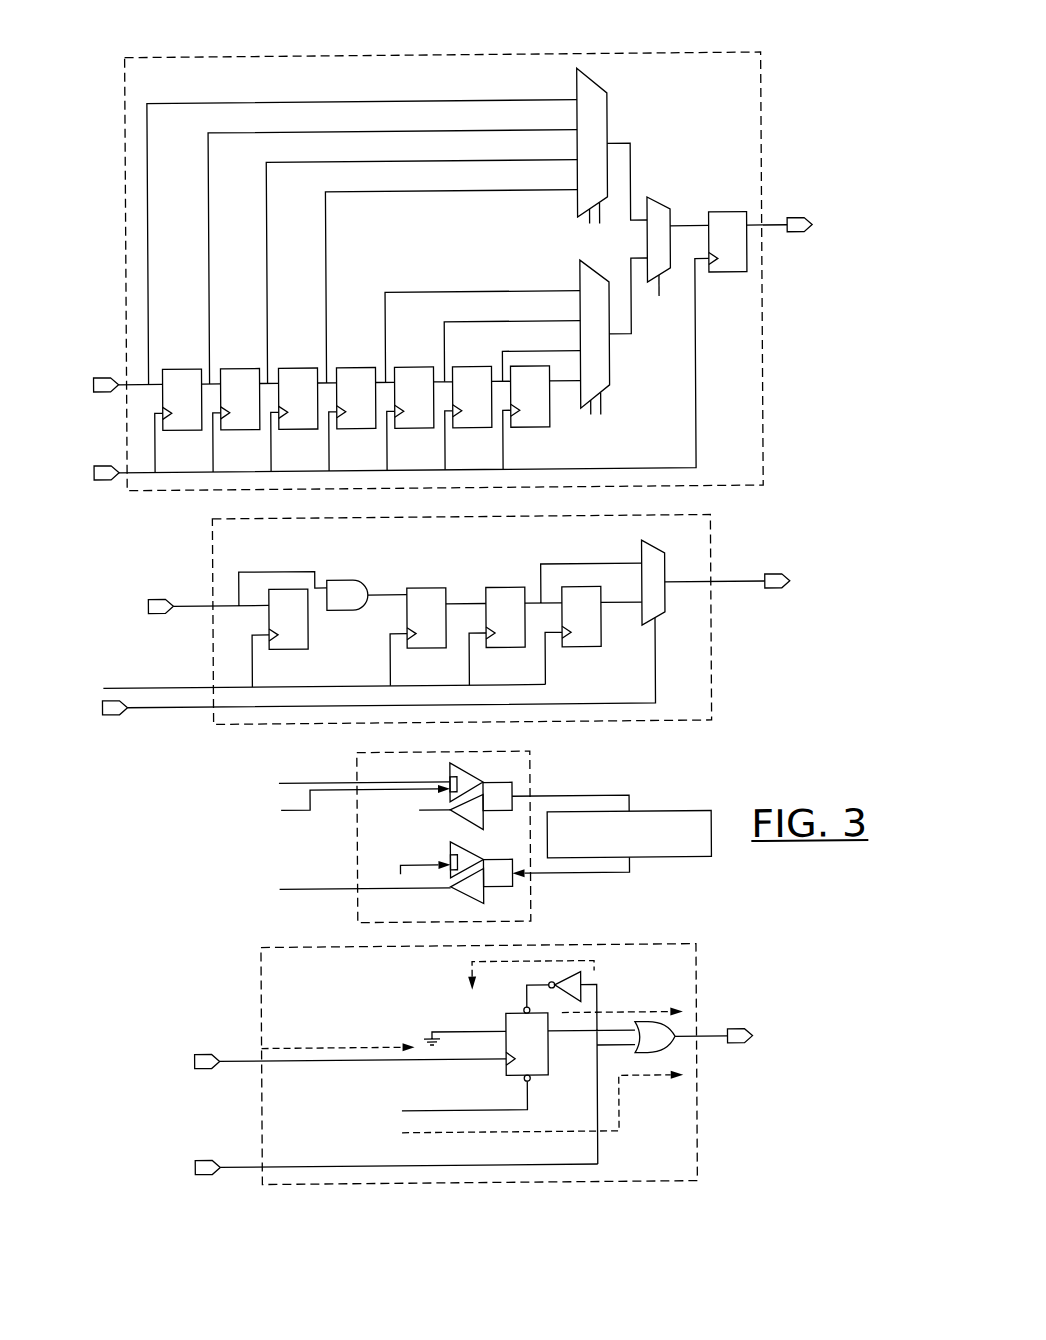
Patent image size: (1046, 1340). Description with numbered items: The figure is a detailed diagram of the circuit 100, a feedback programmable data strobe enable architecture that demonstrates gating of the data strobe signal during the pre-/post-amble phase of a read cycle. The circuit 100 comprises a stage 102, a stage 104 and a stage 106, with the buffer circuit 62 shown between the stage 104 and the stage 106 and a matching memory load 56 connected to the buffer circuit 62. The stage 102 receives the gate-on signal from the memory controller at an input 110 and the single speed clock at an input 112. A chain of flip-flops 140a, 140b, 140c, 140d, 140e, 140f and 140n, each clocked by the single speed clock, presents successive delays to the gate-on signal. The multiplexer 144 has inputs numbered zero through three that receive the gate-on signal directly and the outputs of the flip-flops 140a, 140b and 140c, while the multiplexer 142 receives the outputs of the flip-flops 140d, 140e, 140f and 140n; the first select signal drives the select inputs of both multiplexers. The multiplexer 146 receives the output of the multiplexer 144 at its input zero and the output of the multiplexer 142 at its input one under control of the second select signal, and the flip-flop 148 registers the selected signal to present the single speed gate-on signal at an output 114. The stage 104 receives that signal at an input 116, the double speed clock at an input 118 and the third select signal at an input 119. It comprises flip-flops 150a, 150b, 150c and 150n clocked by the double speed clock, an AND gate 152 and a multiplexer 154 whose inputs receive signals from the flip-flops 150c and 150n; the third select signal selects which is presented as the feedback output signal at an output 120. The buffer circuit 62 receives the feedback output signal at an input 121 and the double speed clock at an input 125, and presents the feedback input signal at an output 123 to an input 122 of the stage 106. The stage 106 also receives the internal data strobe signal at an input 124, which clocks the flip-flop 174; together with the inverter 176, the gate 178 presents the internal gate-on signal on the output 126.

The circuit 100 is at (459, 595).
The stage 102 is at (443, 258).
The stage 104 is at (452, 607).
The stage 106 is at (479, 1052).
The buffer circuit 62 is at (444, 825).
The matching memory load 56 is at (631, 822).
The input 110 is at (88, 393).
The input 112 is at (78, 491).
The output 114 is at (829, 230).
The input 116 is at (126, 623).
The input 118 is at (295, 672).
The input 119 is at (350, 683).
The output 120 is at (802, 591).
The input 121 is at (288, 769).
The input 122 is at (331, 1150).
The output 123 is at (297, 872).
The input 124 is at (306, 1073).
The input 125 is at (335, 806).
The output 126 is at (779, 1054).
The flip-flop 140a is at (179, 420).
The flip-flop 140b is at (237, 419).
The flip-flop 140c is at (295, 419).
The flip-flop 140d is at (353, 418).
The flip-flop 140e is at (411, 418).
The flip-flop 140f is at (468, 417).
The flip-flop 140n is at (527, 417).
The multiplexer 142 is at (614, 351).
The multiplexer 144 is at (610, 161).
The multiplexer 146 is at (670, 255).
The flip-flop 148 is at (730, 259).
The flip-flop 150a is at (282, 638).
The flip-flop 150b is at (421, 637).
The flip-flop 150c is at (500, 636).
The flip-flop 150n is at (578, 635).
The gate 152 is at (348, 579).
The multiplexer 154 is at (669, 575).
The flip-flop 174 is at (539, 1060).
The inverter 176 is at (597, 977).
The gate 178 is at (657, 1064).